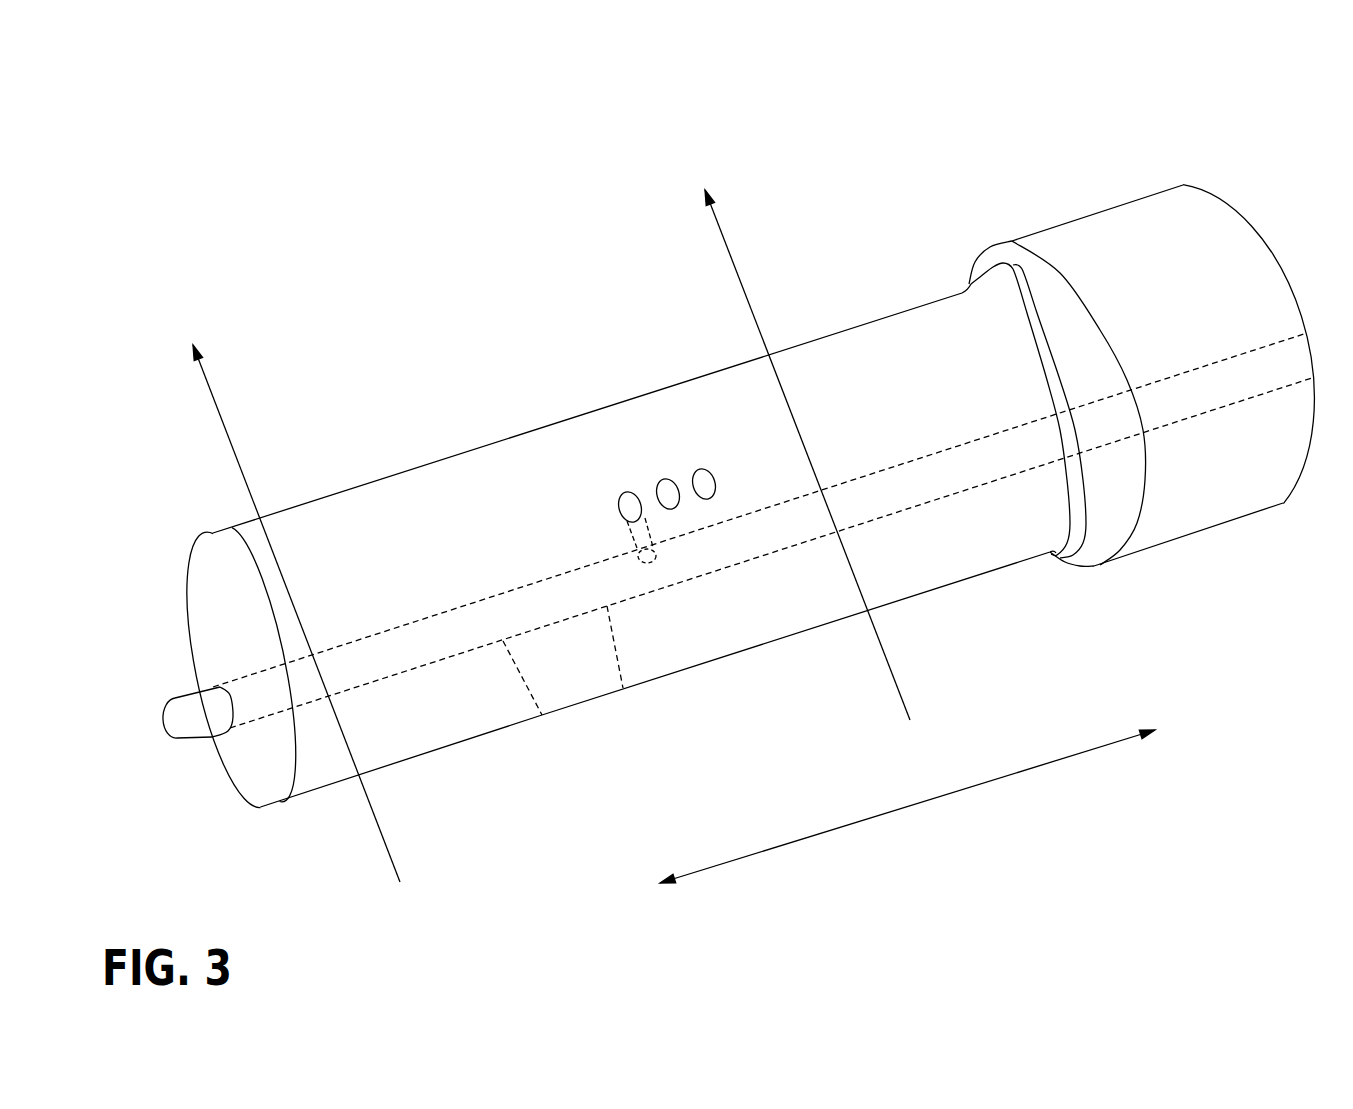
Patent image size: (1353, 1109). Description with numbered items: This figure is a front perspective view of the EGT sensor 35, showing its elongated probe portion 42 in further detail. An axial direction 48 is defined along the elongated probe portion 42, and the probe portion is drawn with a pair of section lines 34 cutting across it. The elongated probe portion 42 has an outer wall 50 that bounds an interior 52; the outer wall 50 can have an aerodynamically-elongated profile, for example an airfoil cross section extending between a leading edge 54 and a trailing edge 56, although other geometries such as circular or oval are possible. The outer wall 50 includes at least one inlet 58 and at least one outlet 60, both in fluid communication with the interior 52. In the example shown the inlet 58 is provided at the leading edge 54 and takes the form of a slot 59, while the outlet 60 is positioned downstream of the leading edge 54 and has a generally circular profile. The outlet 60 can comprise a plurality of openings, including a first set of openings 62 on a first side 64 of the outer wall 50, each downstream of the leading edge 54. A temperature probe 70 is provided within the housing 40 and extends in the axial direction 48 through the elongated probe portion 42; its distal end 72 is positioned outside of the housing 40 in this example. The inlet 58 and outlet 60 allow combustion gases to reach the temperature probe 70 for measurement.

The EGT sensor 35 is at (337, 152).
The housing 40 is at (1262, 245).
The elongated probe portion 42 is at (398, 498).
The axial direction 48 is at (935, 798).
The outer wall 50 is at (535, 427).
The interior 52 is at (978, 513).
The leading edge 54 is at (489, 733).
The trailing edge 56 is at (338, 493).
The inlet 58 is at (580, 702).
The slot 59 is at (595, 685).
The outlet 60 is at (625, 475).
The first set of openings 62 is at (667, 473).
The first side 64 is at (842, 367).
The temperature probe 70 is at (187, 693).
The distal end 72 is at (175, 740).
The section line 34 is at (388, 852).